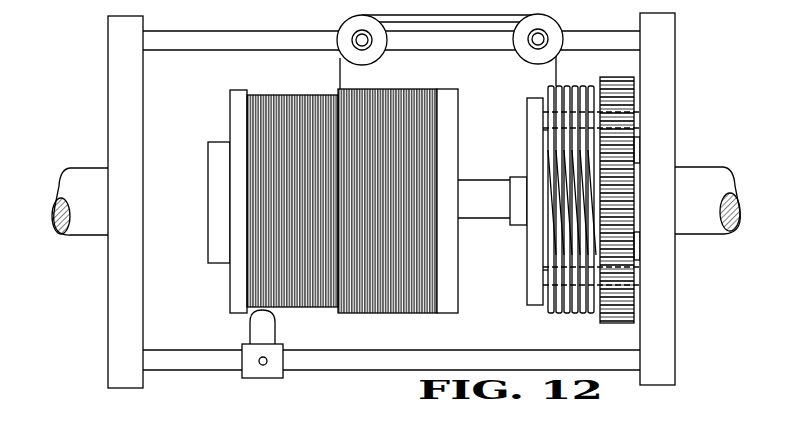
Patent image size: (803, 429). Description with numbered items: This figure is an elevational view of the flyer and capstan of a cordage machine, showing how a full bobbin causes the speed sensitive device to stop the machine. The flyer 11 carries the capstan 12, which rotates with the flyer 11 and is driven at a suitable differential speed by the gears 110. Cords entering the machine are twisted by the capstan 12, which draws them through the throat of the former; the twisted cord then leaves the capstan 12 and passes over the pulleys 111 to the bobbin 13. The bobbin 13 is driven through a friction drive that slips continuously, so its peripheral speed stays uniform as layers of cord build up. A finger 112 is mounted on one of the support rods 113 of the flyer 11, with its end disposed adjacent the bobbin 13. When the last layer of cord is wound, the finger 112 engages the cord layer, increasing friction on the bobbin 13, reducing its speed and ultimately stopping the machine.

The flyer 11 is at (673, 55).
The capstan 12 is at (577, 87).
The bobbin 13 is at (237, 118).
The gears 110 is at (616, 85).
The pulleys 111 is at (368, 22).
The finger 112 is at (272, 320).
The support rods 113 is at (243, 42).